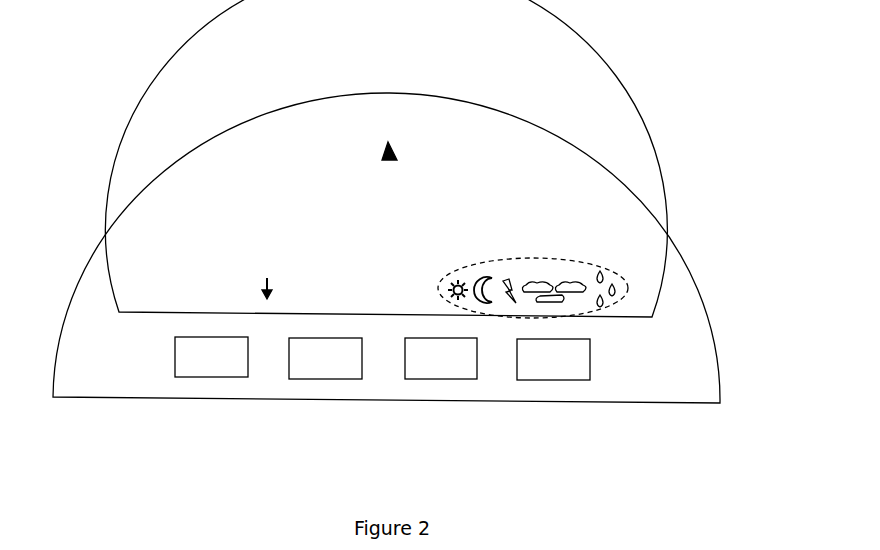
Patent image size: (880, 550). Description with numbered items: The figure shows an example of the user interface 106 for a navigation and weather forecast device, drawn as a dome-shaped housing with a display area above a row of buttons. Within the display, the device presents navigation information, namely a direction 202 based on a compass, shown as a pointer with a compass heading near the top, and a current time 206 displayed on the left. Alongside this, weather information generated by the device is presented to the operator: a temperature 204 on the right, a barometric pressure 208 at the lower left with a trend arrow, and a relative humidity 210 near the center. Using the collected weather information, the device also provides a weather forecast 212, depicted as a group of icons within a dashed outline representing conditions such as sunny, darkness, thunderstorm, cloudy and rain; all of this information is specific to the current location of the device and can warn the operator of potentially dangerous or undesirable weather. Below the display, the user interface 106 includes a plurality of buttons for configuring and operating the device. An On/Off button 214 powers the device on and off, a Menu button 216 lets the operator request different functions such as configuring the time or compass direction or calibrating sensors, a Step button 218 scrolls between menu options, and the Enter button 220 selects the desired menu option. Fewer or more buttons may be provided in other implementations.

The user interface 106 is at (712, 138).
The direction 202 is at (405, 155).
The temperature 204 is at (498, 223).
The current time 206 is at (242, 223).
The barometric pressure 208 is at (198, 273).
The relative humidity 210 is at (382, 265).
The weather forecast 212 is at (620, 278).
The On/Off button 214 is at (218, 372).
The Menu button 216 is at (325, 372).
The Step button 218 is at (440, 372).
The Enter button 220 is at (552, 372).